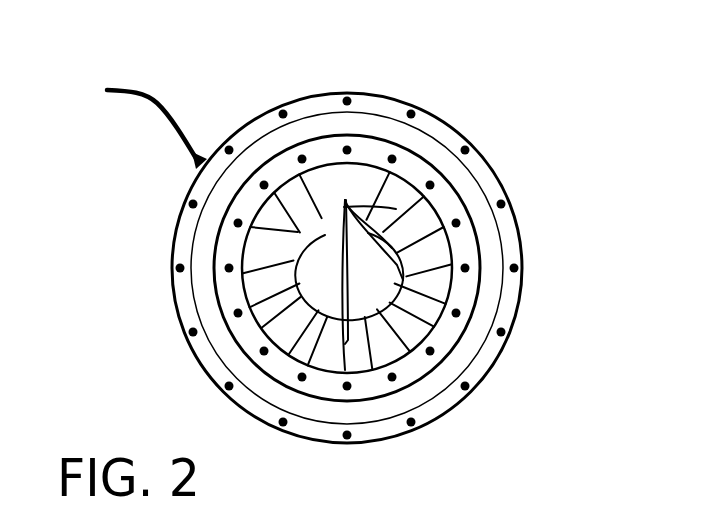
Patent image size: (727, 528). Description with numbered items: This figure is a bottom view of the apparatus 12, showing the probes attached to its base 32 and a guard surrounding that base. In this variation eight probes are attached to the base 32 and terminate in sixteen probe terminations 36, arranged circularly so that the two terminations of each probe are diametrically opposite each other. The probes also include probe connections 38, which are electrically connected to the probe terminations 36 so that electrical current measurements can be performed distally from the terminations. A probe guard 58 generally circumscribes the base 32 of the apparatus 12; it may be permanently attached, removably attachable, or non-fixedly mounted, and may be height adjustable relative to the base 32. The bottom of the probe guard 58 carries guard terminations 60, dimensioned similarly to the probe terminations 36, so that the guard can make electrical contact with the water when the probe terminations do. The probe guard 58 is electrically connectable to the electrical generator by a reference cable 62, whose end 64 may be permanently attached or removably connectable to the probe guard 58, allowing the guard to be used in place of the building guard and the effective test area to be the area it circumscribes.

The apparatus 12 is at (567, 118).
The base 32 is at (323, 155).
The probe terminations 36 is at (259, 352).
The probe connections 38 is at (349, 271).
The probe guard 58 is at (437, 127).
The guard terminations 60 is at (175, 262).
The reference cable 62 is at (147, 92).
The end 64 is at (198, 152).